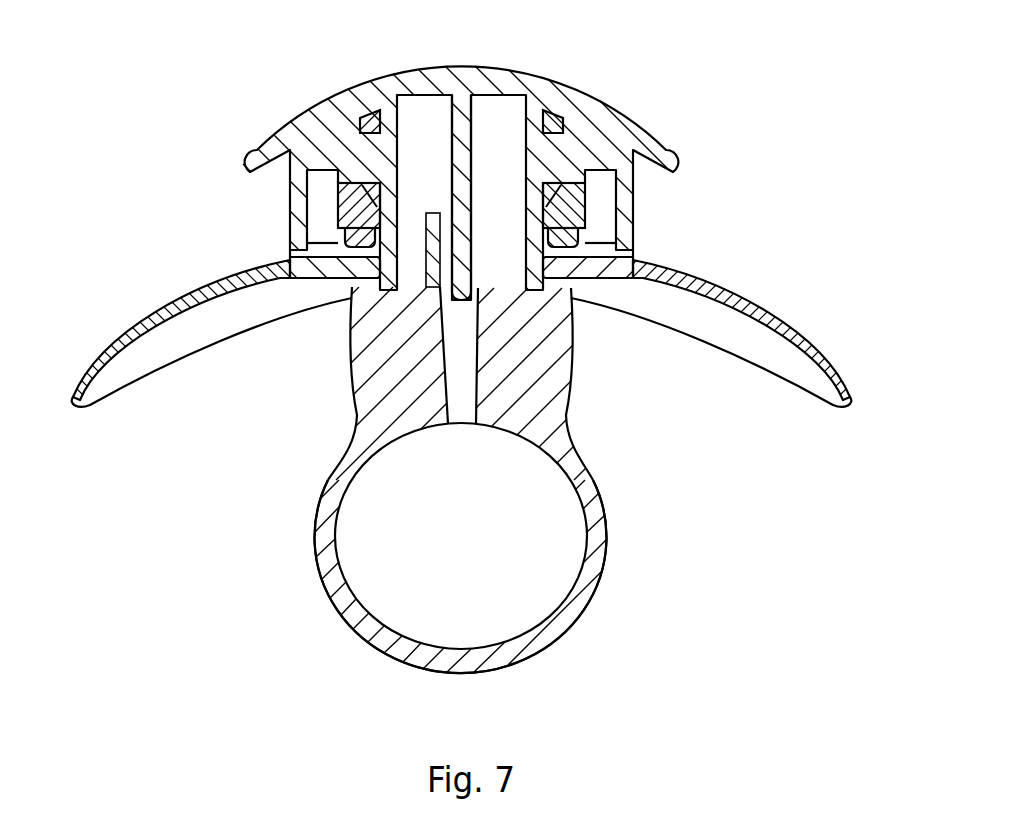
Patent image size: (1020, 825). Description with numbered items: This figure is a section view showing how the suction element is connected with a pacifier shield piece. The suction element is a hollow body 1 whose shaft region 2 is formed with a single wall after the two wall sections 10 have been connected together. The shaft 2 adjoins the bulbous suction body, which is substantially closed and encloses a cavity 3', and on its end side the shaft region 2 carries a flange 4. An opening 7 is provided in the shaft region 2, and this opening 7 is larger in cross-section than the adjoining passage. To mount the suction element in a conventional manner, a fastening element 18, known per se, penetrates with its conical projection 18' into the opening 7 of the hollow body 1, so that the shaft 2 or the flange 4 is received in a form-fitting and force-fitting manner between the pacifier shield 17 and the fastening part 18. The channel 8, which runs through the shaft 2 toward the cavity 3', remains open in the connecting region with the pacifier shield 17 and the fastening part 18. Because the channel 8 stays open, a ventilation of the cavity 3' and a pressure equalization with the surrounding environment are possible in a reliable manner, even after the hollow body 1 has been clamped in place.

The hollow body 1 is at (633, 573).
The shaft region 2 is at (340, 393).
The cavity 3' is at (443, 548).
The flange 4 is at (563, 204).
The opening 7 is at (505, 150).
The channel 8 is at (460, 387).
The wall sections 10 is at (537, 342).
The pacifier shield 17 is at (752, 318).
The fastening element 18 is at (471, 164).
The conical projection 18' is at (455, 325).